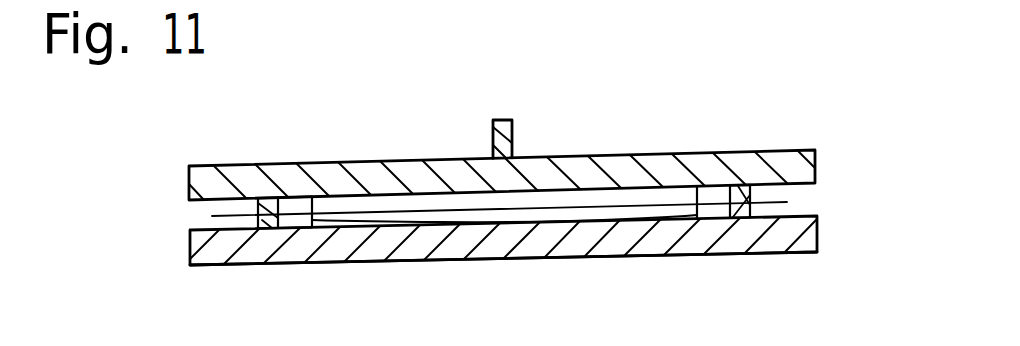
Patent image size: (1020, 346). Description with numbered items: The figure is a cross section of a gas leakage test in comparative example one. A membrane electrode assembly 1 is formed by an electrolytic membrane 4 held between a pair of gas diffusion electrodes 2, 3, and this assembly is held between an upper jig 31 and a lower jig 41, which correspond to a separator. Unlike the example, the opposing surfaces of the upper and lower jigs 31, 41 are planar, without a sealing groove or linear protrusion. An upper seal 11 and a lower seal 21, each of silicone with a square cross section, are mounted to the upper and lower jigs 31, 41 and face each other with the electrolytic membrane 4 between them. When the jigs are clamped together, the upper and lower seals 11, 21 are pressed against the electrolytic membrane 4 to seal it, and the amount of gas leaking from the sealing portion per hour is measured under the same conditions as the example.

The membrane electrode assembly 1 is at (349, 191).
The gas diffusion electrode 2 is at (436, 205).
The gas diffusion electrode 3 is at (380, 217).
The electrolytic membrane 4 is at (622, 222).
The upper seal 11 is at (266, 207).
The lower seal 21 is at (260, 215).
The upper jig 31 is at (565, 155).
The lower jig 41 is at (403, 266).